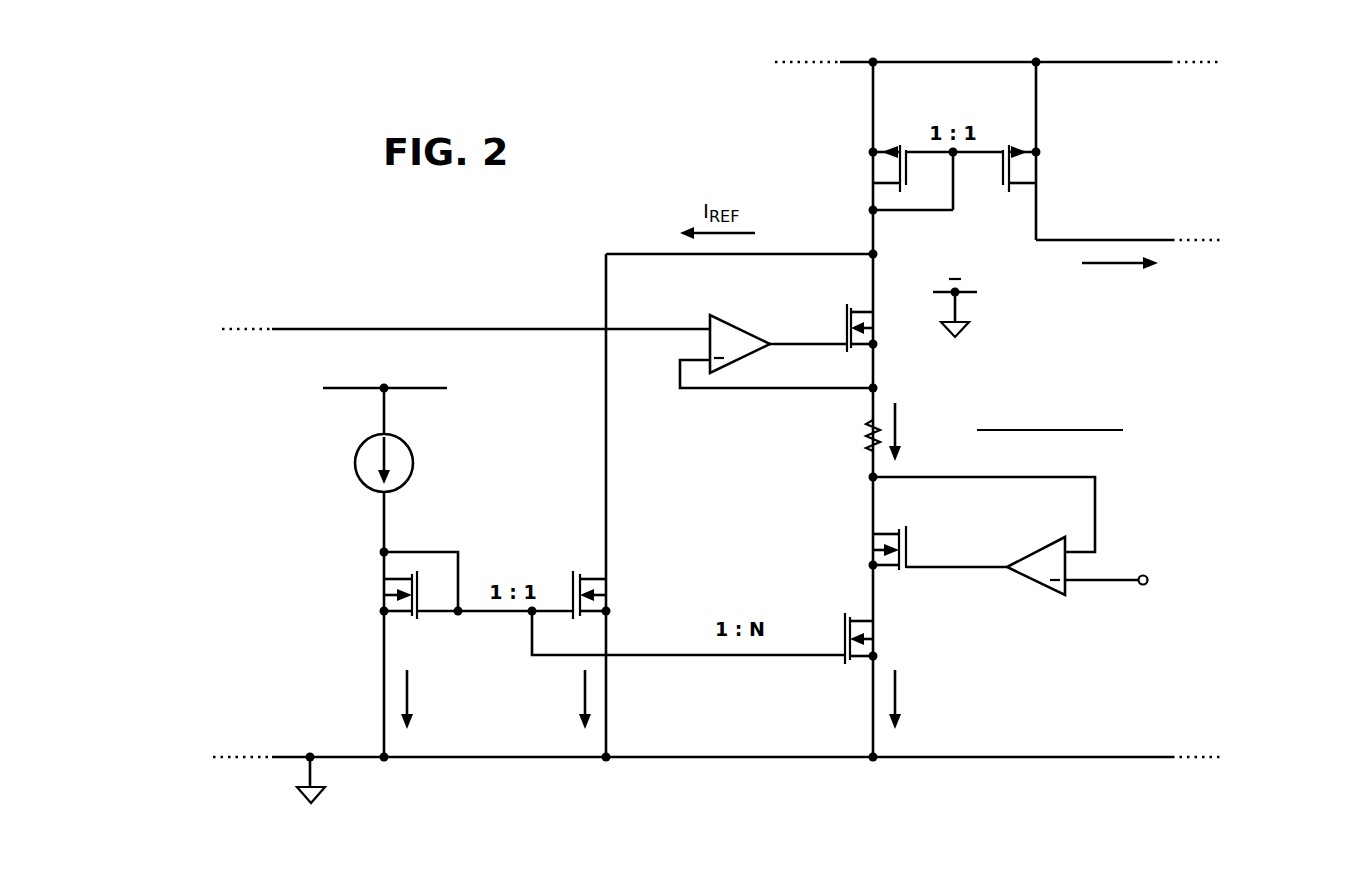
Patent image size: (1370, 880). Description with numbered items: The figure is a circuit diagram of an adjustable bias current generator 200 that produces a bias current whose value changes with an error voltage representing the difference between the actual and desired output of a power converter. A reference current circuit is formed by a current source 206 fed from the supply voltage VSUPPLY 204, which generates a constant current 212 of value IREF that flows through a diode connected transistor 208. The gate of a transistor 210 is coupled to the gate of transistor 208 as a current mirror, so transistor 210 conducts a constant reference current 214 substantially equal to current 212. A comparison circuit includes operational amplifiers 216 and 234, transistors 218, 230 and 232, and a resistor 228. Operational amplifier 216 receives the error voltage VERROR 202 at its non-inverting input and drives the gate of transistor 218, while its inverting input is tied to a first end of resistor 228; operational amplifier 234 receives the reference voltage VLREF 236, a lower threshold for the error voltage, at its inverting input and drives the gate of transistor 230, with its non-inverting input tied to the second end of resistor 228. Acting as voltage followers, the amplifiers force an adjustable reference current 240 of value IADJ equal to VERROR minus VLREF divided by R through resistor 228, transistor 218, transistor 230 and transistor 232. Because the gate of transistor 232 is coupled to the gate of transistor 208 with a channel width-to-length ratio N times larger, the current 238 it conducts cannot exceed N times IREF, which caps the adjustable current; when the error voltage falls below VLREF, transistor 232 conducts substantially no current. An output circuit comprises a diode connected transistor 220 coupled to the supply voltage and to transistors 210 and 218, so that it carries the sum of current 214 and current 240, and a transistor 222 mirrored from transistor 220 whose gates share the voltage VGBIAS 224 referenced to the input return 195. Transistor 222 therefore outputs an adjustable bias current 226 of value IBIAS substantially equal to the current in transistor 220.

The input return 195 is at (297, 798).
The adjustable bias current generator 200 is at (609, 126).
The error voltage VERROR 202 is at (313, 323).
The supply voltage VSUPPLY 204 is at (902, 52).
The current source 206 is at (348, 468).
The diode connected transistor 208 is at (378, 588).
The transistor 210 is at (593, 570).
The constant current 212 is at (413, 680).
The constant reference current 214 is at (572, 715).
The operational amplifier 216 is at (743, 323).
The transistor 218 is at (858, 306).
The diode connected transistor 220 is at (888, 138).
The transistor 222 is at (1020, 138).
The gate voltage VGBIAS 224 is at (962, 241).
The adjustable bias current 226 is at (1072, 263).
The resistor 228 is at (857, 445).
The transistor 230 is at (887, 527).
The transistor 232 is at (858, 610).
The operational amplifier 234 is at (1032, 590).
The reference voltage VLREF 236 is at (1138, 597).
The current 238 is at (902, 677).
The adjustable reference current 240 is at (902, 410).